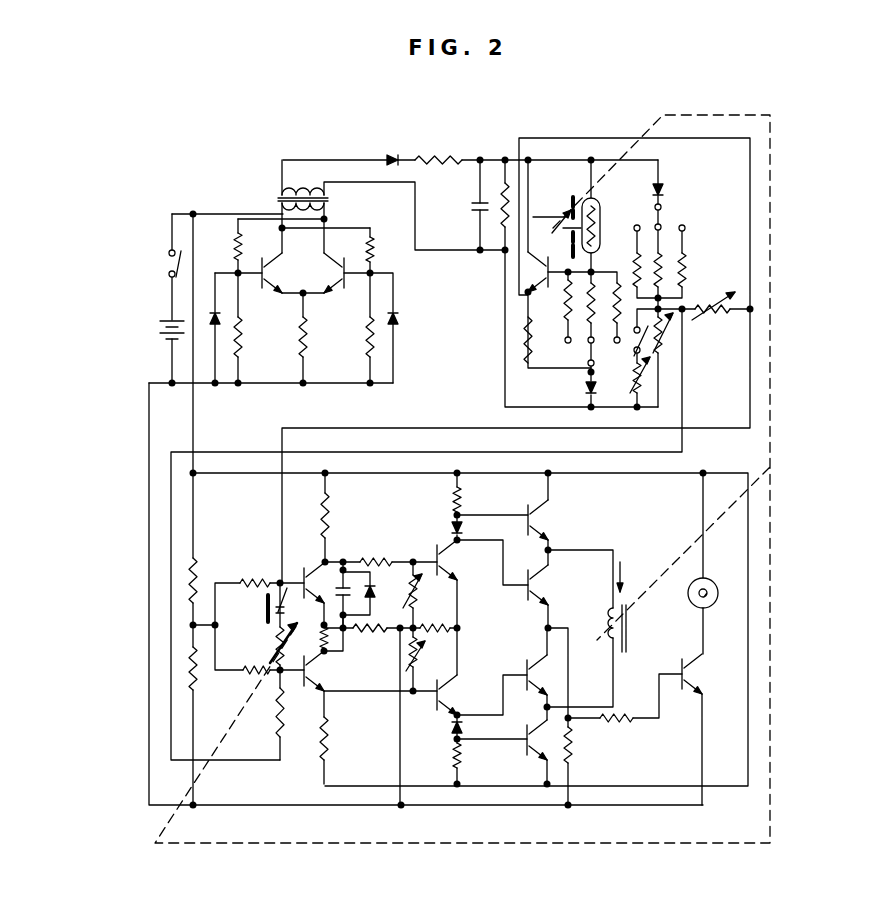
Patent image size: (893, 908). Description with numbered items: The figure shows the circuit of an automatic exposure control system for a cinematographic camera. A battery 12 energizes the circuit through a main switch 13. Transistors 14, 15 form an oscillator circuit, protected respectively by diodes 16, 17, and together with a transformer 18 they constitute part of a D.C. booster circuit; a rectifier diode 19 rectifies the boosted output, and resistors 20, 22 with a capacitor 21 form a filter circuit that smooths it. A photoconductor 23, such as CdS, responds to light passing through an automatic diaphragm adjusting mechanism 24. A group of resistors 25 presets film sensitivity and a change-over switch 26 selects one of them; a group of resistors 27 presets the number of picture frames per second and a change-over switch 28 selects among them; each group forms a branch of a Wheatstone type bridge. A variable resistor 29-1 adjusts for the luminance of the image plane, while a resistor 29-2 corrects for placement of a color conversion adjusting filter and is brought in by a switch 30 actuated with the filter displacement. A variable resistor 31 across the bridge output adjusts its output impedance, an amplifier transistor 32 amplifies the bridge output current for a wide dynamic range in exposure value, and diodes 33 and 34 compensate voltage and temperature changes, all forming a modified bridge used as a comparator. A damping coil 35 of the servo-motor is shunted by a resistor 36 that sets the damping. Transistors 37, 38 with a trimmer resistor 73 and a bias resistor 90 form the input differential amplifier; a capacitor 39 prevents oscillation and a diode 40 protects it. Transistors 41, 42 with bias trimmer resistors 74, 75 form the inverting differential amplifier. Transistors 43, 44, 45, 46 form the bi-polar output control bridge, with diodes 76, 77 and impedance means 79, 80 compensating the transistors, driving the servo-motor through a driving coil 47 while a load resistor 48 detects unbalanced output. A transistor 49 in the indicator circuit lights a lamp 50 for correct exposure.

The battery 12 is at (160, 327).
The main switch 13 is at (169, 266).
The transistor 14 is at (270, 293).
The transistor 15 is at (335, 293).
The diode 16 is at (213, 308).
The diode 17 is at (401, 318).
The transformer 18 is at (279, 189).
The rectifier diode 19 is at (393, 154).
The resistor 20 is at (441, 163).
The capacitor 21 is at (470, 207).
The resistor 22 is at (500, 216).
The photoconductor 23 is at (605, 213).
The automatic diaphragm adjusting mechanism 24 is at (571, 208).
The group of resistors for presetting film sensitivity 25 is at (606, 281).
The change-over switch 26 is at (585, 357).
The group of resistors for presetting frames per second 27 is at (664, 247).
The change-over switch 28 is at (663, 218).
The variable resistor 29-1 is at (662, 352).
The resistor 29-2 is at (641, 380).
The switch 30 is at (640, 336).
The variable resistor 31 is at (705, 308).
The amplifier transistor 32 is at (543, 296).
The diode 33 is at (583, 392).
The diode 34 is at (666, 190).
The damping coil 35 is at (265, 609).
The resistor 36 is at (277, 642).
The transistor 37 is at (308, 566).
The transistor 38 is at (300, 694).
The capacitor 39 is at (345, 585).
The diode 40 is at (375, 594).
The transistor 41 is at (450, 566).
The transistor 42 is at (448, 702).
The transistor 43 is at (543, 529).
The transistor 44 is at (544, 597).
The transistor 45 is at (549, 690).
The transistor 46 is at (539, 756).
The driving coil 47 is at (629, 629).
The load resistor 48 is at (572, 752).
The transistor 49 is at (690, 681).
The lamp 50 is at (708, 582).
The trimmer resistor 73 is at (300, 609).
The trimmer resistor 74 is at (416, 662).
The trimmer resistor 75 is at (421, 600).
The diode 76 is at (465, 731).
The diode 77 is at (465, 530).
The impedance means 79 is at (465, 495).
The impedance means 80 is at (460, 752).
The bias resistor 90 is at (370, 642).